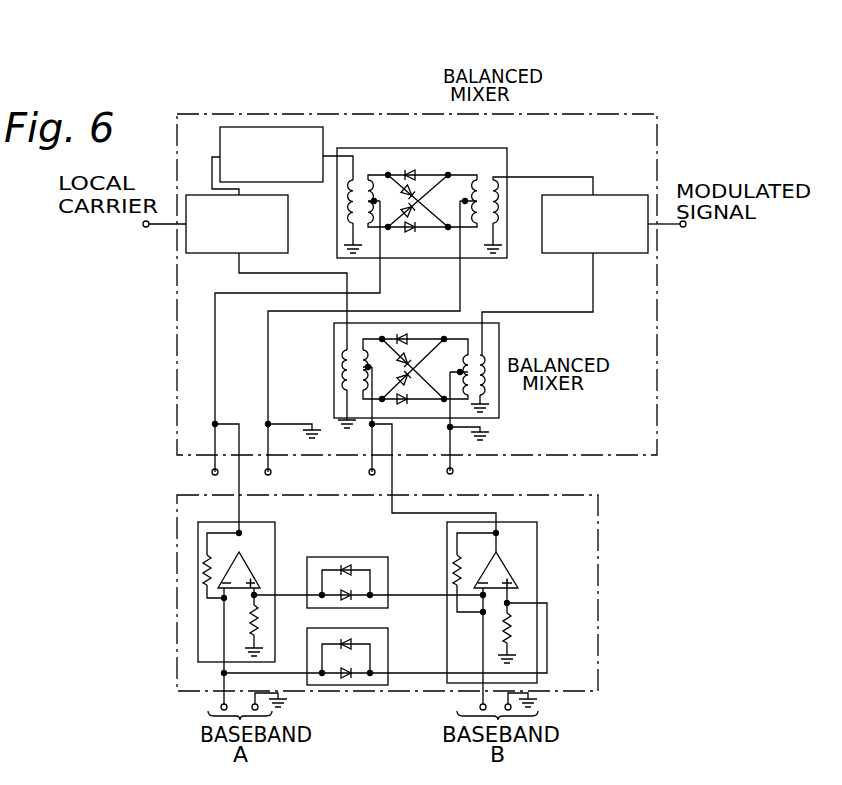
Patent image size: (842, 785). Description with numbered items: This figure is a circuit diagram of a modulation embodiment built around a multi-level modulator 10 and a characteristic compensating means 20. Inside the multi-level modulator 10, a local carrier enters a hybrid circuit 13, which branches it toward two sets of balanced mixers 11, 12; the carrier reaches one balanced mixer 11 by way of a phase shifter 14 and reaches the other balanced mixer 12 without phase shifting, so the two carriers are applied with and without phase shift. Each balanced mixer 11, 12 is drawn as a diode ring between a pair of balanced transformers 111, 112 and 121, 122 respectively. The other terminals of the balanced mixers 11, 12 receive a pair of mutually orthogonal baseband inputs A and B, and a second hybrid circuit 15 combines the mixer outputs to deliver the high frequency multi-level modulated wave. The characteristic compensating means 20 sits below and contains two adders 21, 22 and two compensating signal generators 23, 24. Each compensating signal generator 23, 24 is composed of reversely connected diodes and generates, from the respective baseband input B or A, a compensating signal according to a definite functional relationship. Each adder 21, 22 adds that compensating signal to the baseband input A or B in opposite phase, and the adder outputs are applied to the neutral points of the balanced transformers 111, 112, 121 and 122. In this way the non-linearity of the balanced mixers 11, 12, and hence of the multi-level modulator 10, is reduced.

The multi-level modulator 10 is at (657, 150).
The balanced mixer 11 is at (446, 88).
The balanced mixer 12 is at (499, 350).
The hybrid circuit 13 is at (288, 224).
The phase shifter 14 is at (323, 137).
The hybrid circuit 15 is at (622, 195).
The characteristic compensating means 20 is at (598, 497).
The adder 21 is at (275, 525).
The adder 22 is at (537, 545).
The compensating signal generator 23 is at (378, 557).
The compensating signal generator 24 is at (386, 628).
The balanced transformer 111 is at (366, 214).
The balanced transformer 112 is at (475, 214).
The balanced transformer 121 is at (360, 383).
The balanced transformer 122 is at (466, 379).